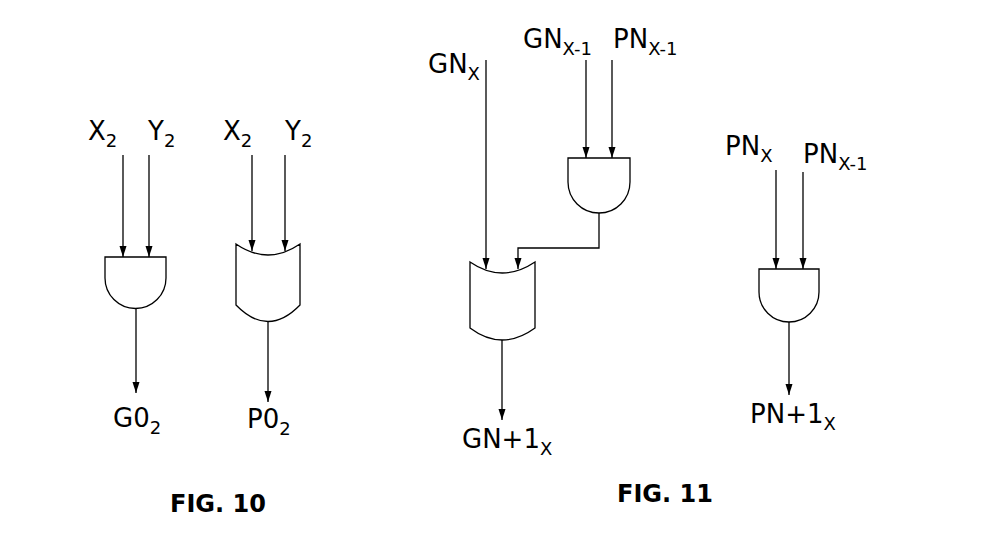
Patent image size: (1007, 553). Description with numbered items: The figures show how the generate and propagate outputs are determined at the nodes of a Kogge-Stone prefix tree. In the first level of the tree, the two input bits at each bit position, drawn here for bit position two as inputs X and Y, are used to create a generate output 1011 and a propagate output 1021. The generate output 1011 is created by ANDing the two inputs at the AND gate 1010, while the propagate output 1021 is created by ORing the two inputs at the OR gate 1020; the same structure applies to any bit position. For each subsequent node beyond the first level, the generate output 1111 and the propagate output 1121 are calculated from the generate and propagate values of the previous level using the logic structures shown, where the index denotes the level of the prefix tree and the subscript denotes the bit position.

In FIG. 10, the AND gate 1010 is at (105, 273).
In FIG. 10, the generate output 1011 is at (137, 357).
In FIG. 10, the OR gate 1020 is at (302, 285).
In FIG. 10, the propagate output 1021 is at (270, 357).
In FIG. 11, the generate output 1111 is at (505, 377).
In FIG. 11, the propagate output 1121 is at (790, 357).